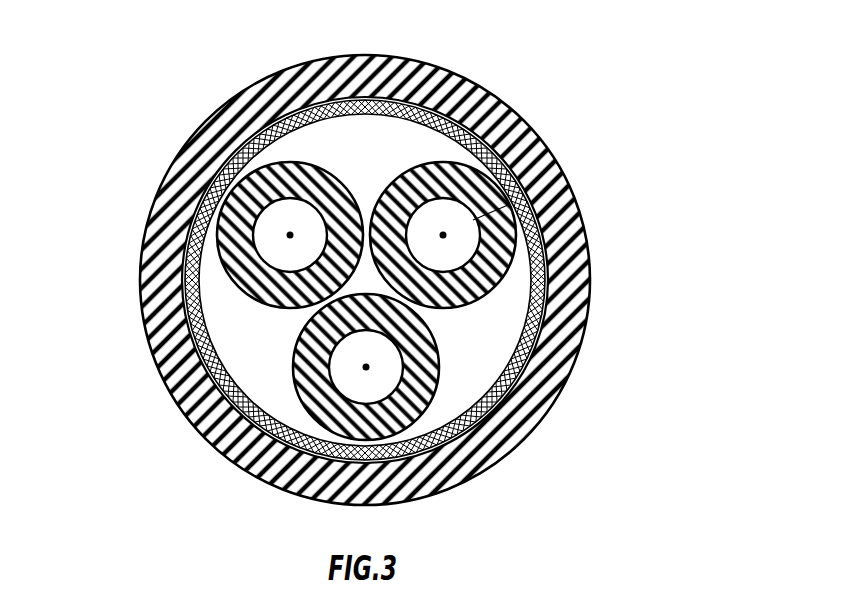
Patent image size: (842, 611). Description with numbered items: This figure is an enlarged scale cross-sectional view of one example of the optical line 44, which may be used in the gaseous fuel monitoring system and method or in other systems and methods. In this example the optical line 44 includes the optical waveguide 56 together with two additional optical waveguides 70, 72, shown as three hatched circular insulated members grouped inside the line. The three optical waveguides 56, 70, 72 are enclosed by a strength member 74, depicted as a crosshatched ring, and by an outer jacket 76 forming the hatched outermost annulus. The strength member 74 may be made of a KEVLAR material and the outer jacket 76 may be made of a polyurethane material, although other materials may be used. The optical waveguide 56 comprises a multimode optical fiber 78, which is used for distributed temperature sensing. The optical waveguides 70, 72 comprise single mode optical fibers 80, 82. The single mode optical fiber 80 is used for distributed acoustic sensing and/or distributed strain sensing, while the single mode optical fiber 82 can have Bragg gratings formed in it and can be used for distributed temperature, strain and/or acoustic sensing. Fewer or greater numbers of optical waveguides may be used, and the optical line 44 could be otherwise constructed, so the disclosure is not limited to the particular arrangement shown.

The optical line 44 is at (366, 259).
The outer jacket 76 is at (152, 208).
The single mode optical fiber 82 is at (542, 185).
The strength member 74 is at (502, 406).
The single mode optical fiber 80 is at (236, 228).
The optical waveguide 70 is at (310, 163).
The optical waveguide 72 is at (480, 298).
The multimode optical fiber 78 is at (334, 367).
The optical waveguide 56 is at (298, 342).